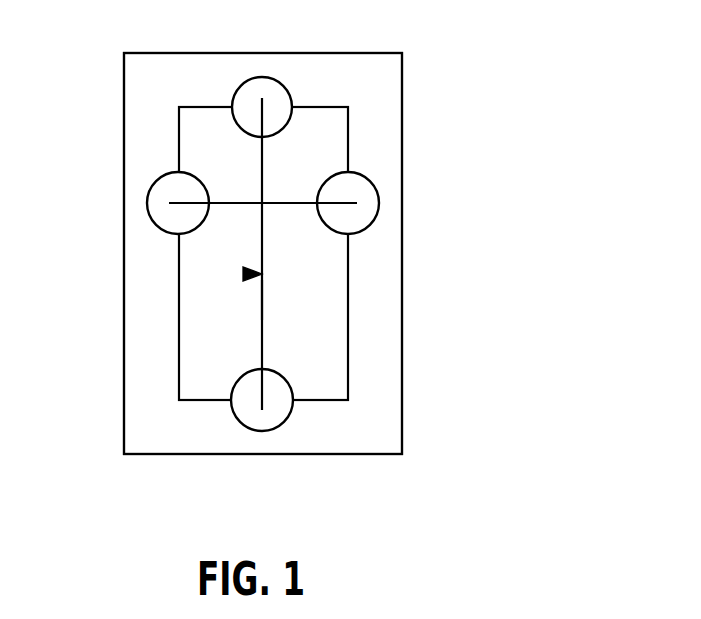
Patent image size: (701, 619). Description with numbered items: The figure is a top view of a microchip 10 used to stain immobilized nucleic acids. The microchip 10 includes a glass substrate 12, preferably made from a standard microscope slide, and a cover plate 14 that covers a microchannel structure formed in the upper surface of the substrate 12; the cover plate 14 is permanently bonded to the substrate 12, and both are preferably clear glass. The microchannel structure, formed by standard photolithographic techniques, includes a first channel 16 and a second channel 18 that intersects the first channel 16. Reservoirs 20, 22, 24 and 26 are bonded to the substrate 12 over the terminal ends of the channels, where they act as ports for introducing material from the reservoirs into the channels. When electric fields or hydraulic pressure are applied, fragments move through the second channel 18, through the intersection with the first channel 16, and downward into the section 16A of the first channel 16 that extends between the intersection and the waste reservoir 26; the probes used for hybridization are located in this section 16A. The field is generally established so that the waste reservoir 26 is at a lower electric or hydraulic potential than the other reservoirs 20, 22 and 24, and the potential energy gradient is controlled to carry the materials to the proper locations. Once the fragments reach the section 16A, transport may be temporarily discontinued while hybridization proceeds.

The microchip 10 is at (276, 255).
The glass substrate 12 is at (402, 365).
The cover plate 14 is at (330, 400).
The first channel 16 is at (244, 274).
The section of the first channel 16A is at (262, 302).
The second channel 18 is at (300, 203).
The reservoir 20 is at (147, 200).
The reservoir 22 is at (379, 187).
The reservoir 24 is at (223, 53).
The waste reservoir 26 is at (250, 430).